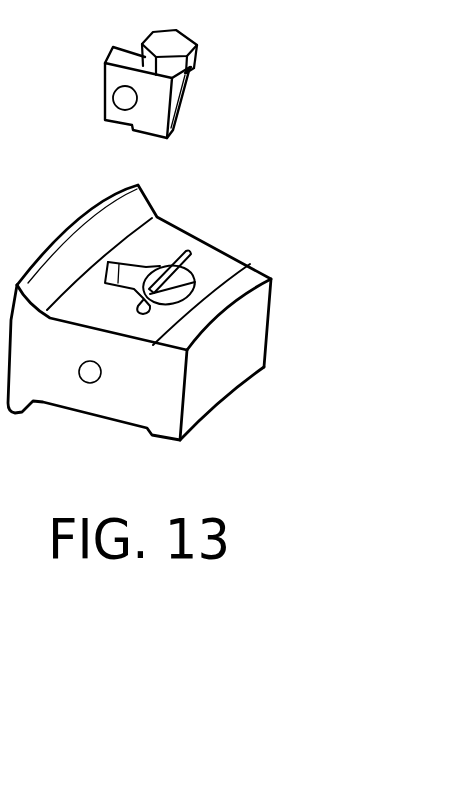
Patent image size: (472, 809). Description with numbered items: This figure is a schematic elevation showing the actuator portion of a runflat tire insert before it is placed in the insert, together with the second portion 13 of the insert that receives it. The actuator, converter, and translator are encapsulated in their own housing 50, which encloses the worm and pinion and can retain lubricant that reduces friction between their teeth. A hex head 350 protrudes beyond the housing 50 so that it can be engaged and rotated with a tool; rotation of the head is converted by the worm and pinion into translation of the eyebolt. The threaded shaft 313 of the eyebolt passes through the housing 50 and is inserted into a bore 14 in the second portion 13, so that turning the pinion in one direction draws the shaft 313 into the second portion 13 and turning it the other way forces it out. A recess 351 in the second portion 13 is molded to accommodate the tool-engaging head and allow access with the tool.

The second portion 13 is at (47, 283).
The bore 14 is at (89, 374).
The housing 50 is at (107, 72).
The shaft 313 is at (117, 100).
The hex head 350 is at (177, 42).
The keyhole recess 351 is at (195, 270).